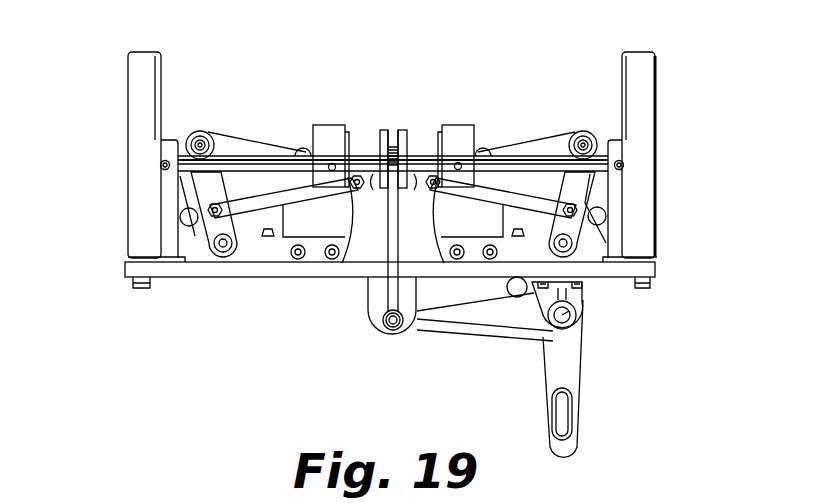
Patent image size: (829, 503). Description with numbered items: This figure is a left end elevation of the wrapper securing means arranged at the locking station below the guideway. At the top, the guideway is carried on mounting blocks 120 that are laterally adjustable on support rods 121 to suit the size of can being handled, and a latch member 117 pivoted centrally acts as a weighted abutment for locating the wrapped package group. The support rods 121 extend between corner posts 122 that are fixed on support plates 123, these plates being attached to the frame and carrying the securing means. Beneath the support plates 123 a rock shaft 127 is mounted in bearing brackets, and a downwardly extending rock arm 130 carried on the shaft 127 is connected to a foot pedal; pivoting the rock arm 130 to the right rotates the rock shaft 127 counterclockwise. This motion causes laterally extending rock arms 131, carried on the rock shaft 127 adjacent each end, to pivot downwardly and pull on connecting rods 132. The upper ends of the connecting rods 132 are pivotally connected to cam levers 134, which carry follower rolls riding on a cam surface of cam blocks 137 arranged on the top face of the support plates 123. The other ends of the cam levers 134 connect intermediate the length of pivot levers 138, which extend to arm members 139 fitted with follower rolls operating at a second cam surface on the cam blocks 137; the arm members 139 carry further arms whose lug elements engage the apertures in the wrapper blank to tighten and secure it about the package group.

The latch member 117 is at (393, 130).
The mounting blocks 120 is at (322, 125).
The support rods 121 is at (357, 153).
The corner posts 122 is at (138, 90).
The support plates 123 is at (130, 268).
The rock shaft 127 is at (570, 312).
The rock arm 130 is at (568, 370).
The rock arms 131 is at (478, 325).
The connecting rods 132 is at (372, 300).
The cam levers 134 is at (258, 236).
The cam blocks 137 is at (338, 233).
The pivot levers 138 is at (197, 183).
The arm members 139 is at (253, 124).